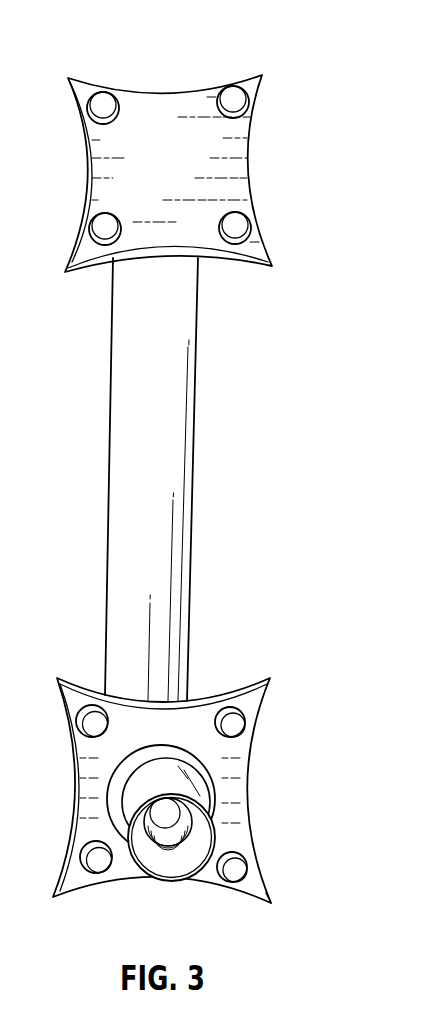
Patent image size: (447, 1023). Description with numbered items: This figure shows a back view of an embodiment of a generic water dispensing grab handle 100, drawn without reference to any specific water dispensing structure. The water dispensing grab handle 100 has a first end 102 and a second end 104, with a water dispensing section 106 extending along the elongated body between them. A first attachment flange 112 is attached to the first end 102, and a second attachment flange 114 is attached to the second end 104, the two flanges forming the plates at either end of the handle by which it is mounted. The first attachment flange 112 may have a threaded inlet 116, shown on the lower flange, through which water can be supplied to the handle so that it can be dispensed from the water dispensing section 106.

The water dispensing grab handle 100 is at (300, 48).
The first end 102 is at (150, 479).
The second end 104 is at (112, 310).
The water dispensing section 106 is at (173, 403).
The first attachment flange 112 is at (232, 795).
The second attachment flange 114 is at (189, 161).
The threaded inlet 116 is at (183, 838).